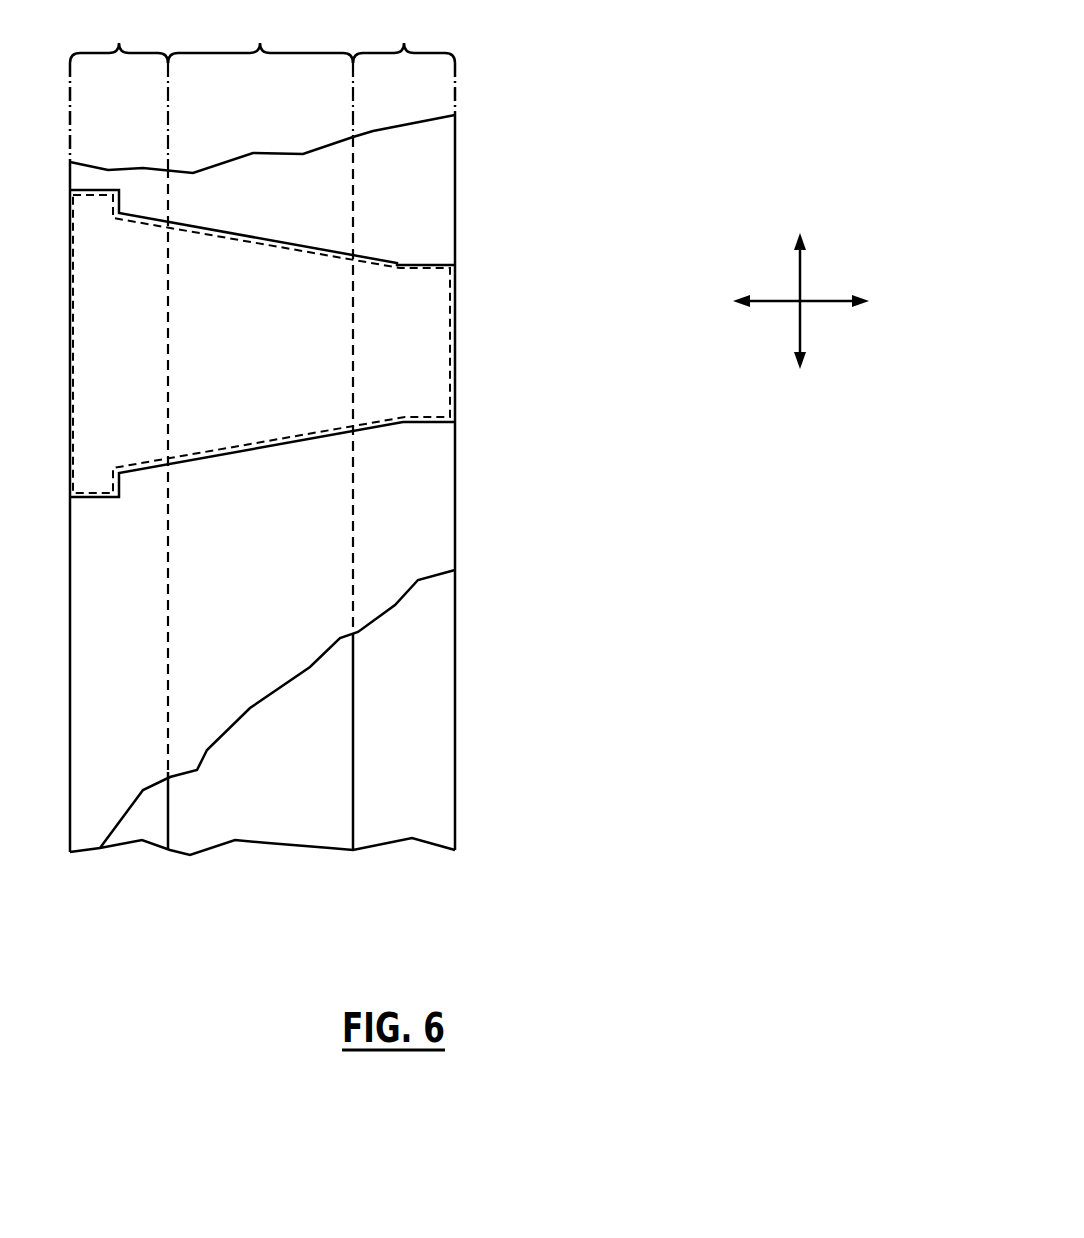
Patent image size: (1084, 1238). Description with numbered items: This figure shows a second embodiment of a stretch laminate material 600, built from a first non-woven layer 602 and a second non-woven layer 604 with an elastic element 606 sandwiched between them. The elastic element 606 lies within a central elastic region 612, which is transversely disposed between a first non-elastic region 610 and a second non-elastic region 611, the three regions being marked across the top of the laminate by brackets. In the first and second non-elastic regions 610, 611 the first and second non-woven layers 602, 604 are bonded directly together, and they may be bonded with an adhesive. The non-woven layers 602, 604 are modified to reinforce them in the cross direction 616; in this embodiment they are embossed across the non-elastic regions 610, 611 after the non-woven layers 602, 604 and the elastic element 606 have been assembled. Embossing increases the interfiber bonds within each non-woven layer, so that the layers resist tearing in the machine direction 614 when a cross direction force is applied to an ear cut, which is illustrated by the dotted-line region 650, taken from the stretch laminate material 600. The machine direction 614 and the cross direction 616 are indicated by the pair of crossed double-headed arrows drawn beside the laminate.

The stretch laminate material 600 is at (567, 356).
The first non-woven layer 602 is at (430, 468).
The second non-woven layer 604 is at (432, 789).
The elastic element 606 is at (322, 787).
The first non-elastic region 610 is at (119, 430).
The second non-elastic region 611 is at (404, 430).
The elastic region 612 is at (260, 37).
The machine direction 614 is at (800, 270).
The cross direction 616 is at (833, 301).
The ear cut 650 is at (383, 283).